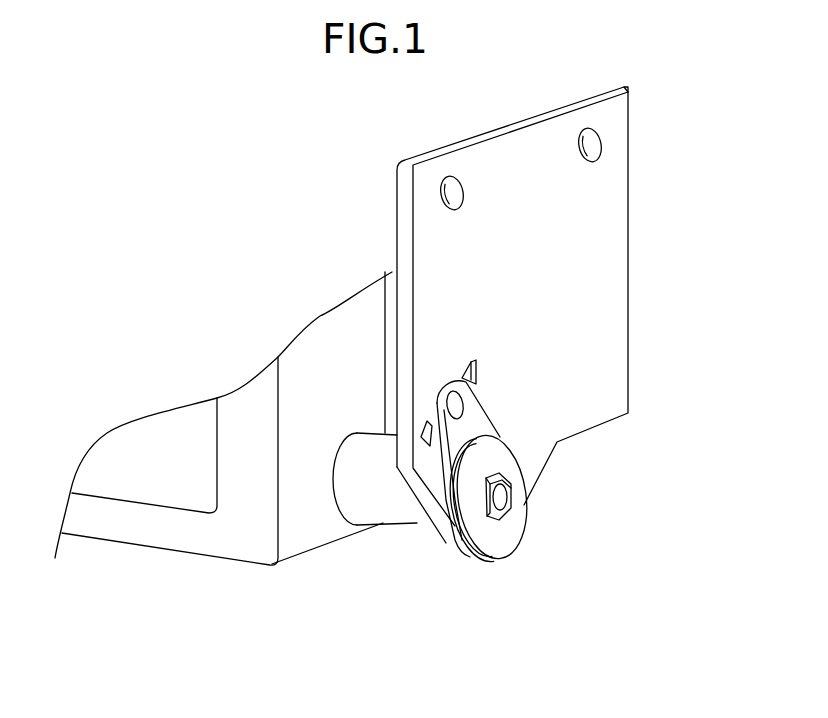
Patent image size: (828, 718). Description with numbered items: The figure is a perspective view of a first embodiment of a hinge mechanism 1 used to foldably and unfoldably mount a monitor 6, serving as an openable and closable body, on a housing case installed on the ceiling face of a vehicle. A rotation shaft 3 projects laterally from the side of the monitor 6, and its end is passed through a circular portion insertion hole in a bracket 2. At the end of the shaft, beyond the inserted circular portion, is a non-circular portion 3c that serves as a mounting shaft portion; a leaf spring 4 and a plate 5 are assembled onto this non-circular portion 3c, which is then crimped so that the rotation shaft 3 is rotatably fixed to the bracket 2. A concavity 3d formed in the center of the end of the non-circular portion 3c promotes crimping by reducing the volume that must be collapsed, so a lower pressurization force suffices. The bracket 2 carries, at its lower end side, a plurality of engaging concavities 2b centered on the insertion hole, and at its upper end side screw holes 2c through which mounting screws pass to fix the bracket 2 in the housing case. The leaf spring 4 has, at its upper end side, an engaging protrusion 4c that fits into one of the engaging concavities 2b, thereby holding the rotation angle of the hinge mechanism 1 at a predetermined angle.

The hinge mechanism 1 is at (437, 576).
The bracket 2 is at (593, 245).
The engaging concavities 2b is at (473, 363).
The screw holes 2c is at (457, 188).
The rotation shaft 3 is at (368, 510).
The non-circular portion 3c is at (505, 513).
The concavity for promoting crimping 3d is at (500, 494).
The leaf spring 4 is at (482, 421).
The engaging protrusion 4c is at (463, 406).
The plate 5 is at (500, 533).
The monitor 6 is at (150, 532).